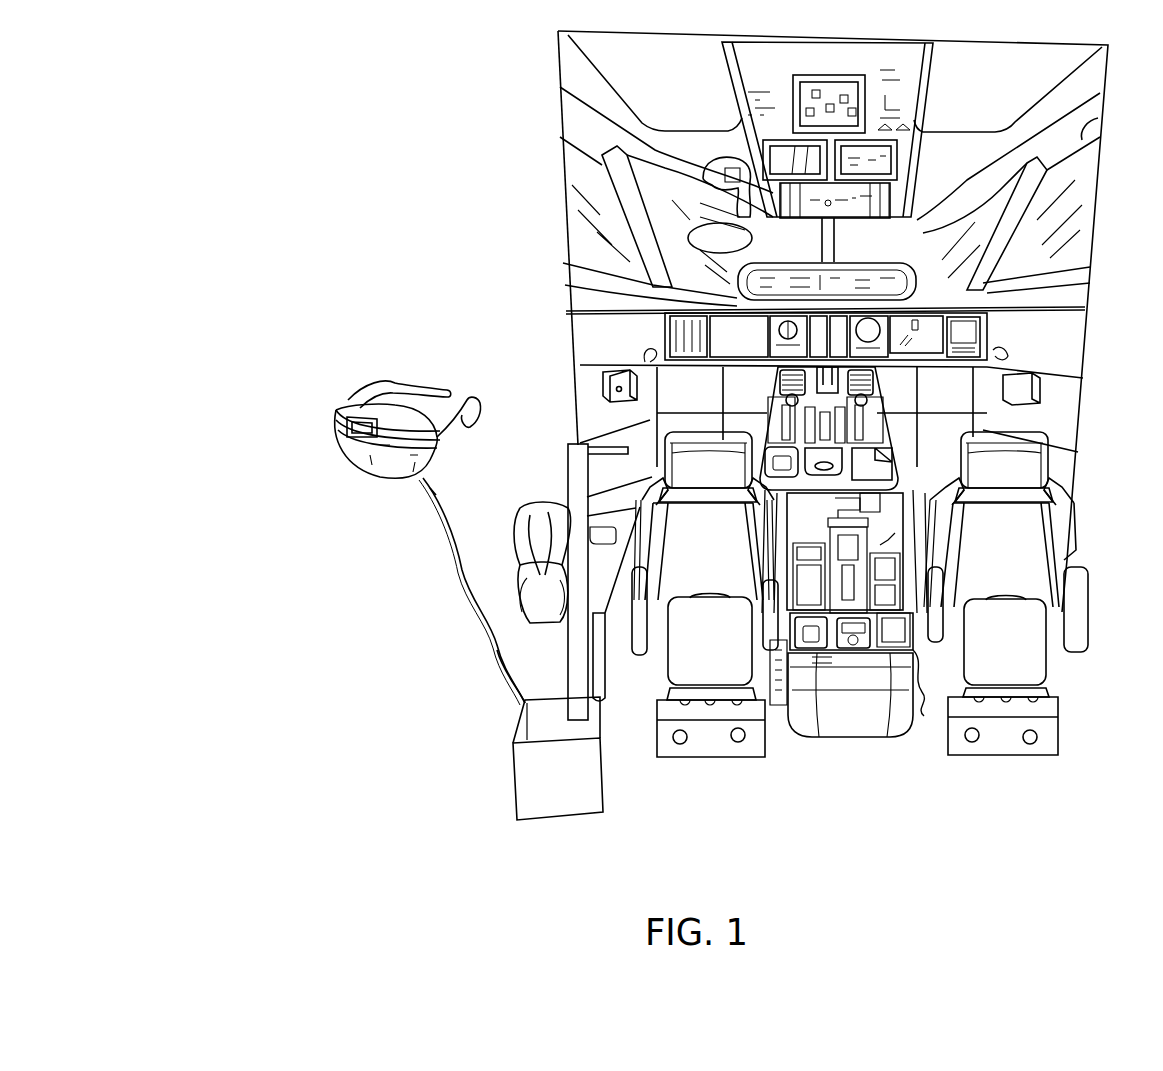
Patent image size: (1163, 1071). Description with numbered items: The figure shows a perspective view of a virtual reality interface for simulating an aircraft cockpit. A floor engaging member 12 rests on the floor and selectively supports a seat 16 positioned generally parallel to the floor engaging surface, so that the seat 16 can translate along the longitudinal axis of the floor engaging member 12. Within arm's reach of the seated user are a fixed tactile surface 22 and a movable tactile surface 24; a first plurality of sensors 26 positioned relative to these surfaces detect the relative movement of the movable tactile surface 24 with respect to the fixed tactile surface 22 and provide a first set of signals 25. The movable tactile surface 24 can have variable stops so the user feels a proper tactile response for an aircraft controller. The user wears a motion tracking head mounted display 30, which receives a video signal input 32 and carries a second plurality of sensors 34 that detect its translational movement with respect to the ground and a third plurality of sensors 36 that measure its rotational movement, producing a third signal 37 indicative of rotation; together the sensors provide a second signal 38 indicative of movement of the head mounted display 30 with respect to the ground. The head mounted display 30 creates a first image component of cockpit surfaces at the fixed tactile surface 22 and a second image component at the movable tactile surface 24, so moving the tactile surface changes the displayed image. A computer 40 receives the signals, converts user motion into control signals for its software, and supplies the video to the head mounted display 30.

The floor engaging member 12 is at (1043, 743).
The seat 16 is at (707, 637).
The fixed tactile surface 22 is at (839, 648).
The movable tactile surface 24 is at (773, 645).
The first set of signals 25 is at (822, 648).
The first plurality of sensors 26 is at (885, 540).
The motion tracking head mounted display 30 is at (334, 438).
The video signal input 32 is at (495, 680).
The second plurality of sensors 34 is at (344, 399).
The third plurality of sensors 36 is at (333, 434).
The third signal 37 is at (410, 522).
The second signal 38 is at (430, 560).
The computer 40 is at (572, 788).